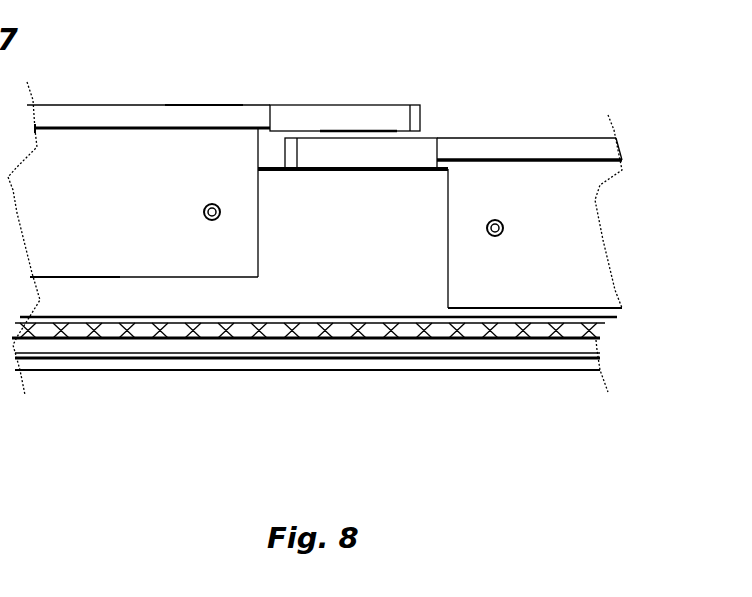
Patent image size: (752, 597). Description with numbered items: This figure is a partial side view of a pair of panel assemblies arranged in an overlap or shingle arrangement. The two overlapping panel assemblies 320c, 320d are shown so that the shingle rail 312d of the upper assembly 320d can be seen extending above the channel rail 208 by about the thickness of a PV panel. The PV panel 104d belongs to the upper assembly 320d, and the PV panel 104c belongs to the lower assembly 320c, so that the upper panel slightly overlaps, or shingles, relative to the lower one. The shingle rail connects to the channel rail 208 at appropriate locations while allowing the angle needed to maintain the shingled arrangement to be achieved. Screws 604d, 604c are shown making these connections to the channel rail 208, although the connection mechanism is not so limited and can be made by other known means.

The upper panel assembly 320d is at (148, 84).
The shingle rail 312d is at (192, 157).
The PV panel 104d is at (343, 105).
The PV panel 104c is at (450, 138).
The lower panel assembly 320c is at (580, 98).
The channel rail 208 is at (317, 269).
The screw 604d is at (216, 220).
The screw 604c is at (500, 235).